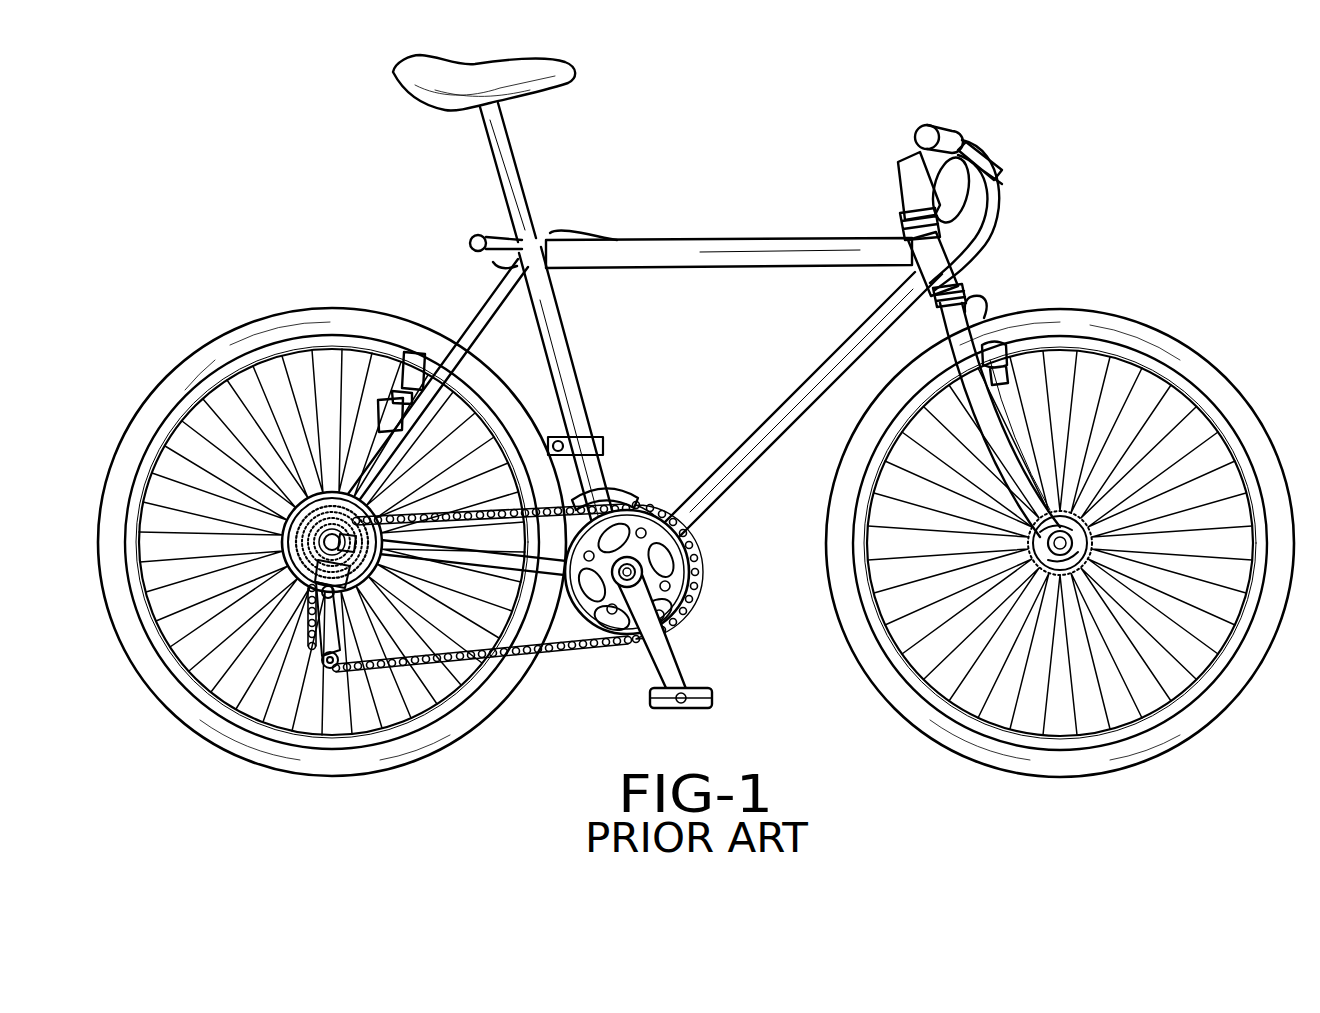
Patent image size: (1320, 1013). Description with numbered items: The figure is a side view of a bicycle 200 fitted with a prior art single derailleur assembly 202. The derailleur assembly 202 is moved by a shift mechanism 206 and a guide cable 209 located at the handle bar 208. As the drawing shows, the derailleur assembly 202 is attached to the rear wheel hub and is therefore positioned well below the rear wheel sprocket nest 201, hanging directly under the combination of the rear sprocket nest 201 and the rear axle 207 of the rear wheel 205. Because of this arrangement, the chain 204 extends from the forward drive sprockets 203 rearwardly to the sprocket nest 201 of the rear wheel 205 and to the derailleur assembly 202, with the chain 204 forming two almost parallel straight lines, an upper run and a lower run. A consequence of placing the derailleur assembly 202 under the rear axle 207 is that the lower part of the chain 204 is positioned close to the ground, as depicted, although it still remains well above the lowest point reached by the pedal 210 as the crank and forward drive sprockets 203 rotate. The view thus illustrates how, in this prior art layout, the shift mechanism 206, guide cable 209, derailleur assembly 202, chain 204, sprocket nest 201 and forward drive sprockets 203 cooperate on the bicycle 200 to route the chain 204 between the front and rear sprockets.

The bicycle 200 is at (696, 416).
The rear wheel sprocket nest 201 is at (312, 523).
The derailleur assembly 202 is at (337, 588).
The forward drive sprockets 203 is at (633, 518).
The chain 204 is at (458, 517).
The rear wheel 205 is at (188, 368).
The shift mechanism 206 is at (976, 163).
The rear axle 207 is at (320, 545).
The handle bar 208 is at (920, 133).
The guide cable 209 is at (985, 232).
The pedal 210 is at (698, 688).